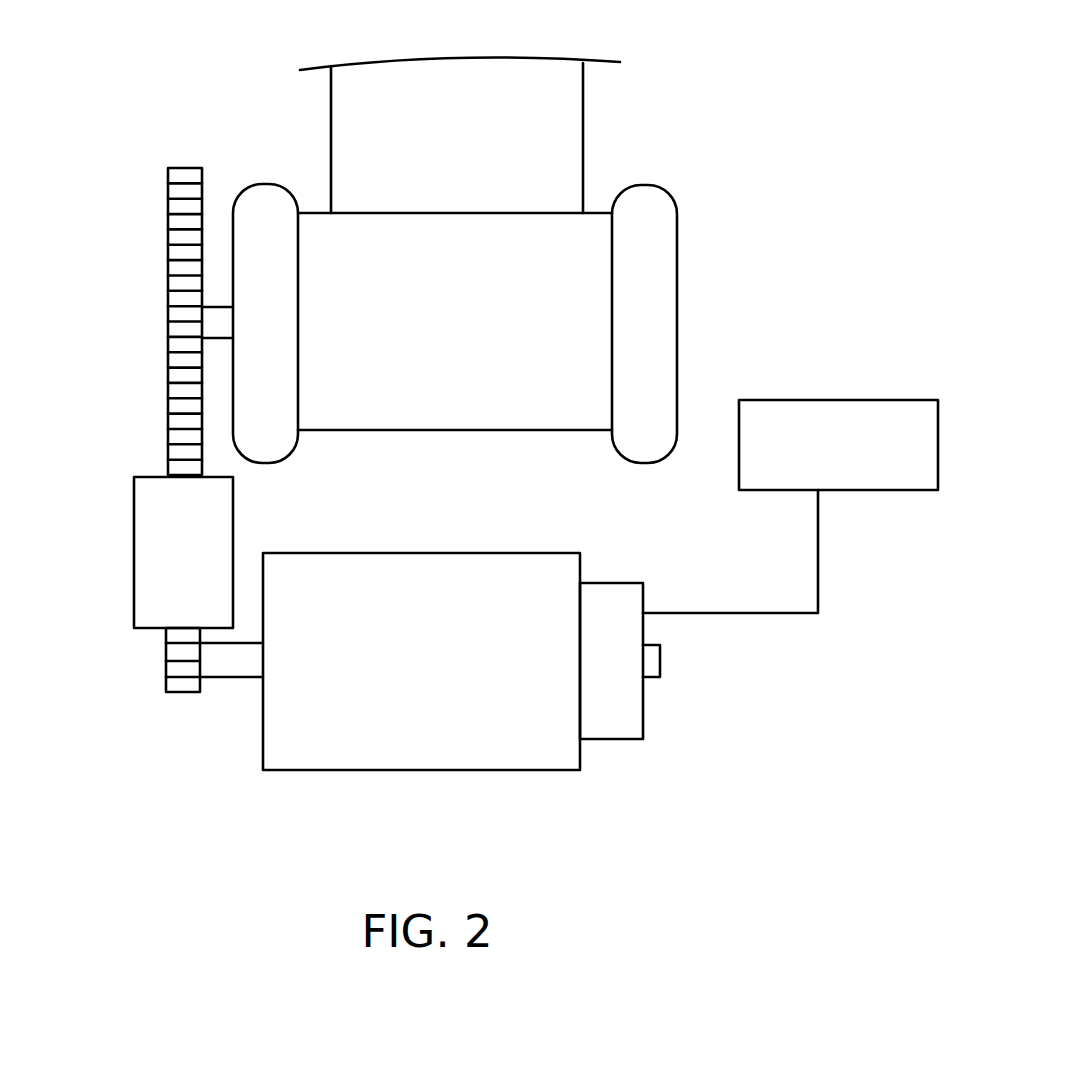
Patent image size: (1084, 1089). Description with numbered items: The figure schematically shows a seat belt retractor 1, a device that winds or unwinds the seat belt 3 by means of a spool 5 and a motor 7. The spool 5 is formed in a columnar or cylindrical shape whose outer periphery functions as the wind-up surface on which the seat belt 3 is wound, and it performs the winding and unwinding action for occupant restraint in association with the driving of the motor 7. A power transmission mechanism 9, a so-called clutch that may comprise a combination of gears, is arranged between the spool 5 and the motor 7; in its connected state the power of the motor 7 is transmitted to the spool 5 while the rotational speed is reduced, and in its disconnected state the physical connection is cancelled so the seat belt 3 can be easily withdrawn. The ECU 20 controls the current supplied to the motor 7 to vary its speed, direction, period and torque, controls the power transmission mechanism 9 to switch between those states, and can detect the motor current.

The seat belt retractor 1 is at (218, 92).
The seat belt 3 is at (515, 95).
The spool 5 is at (585, 232).
The motor 7 is at (425, 755).
The power transmission mechanism 9 is at (133, 515).
The ECU 20 is at (885, 400).